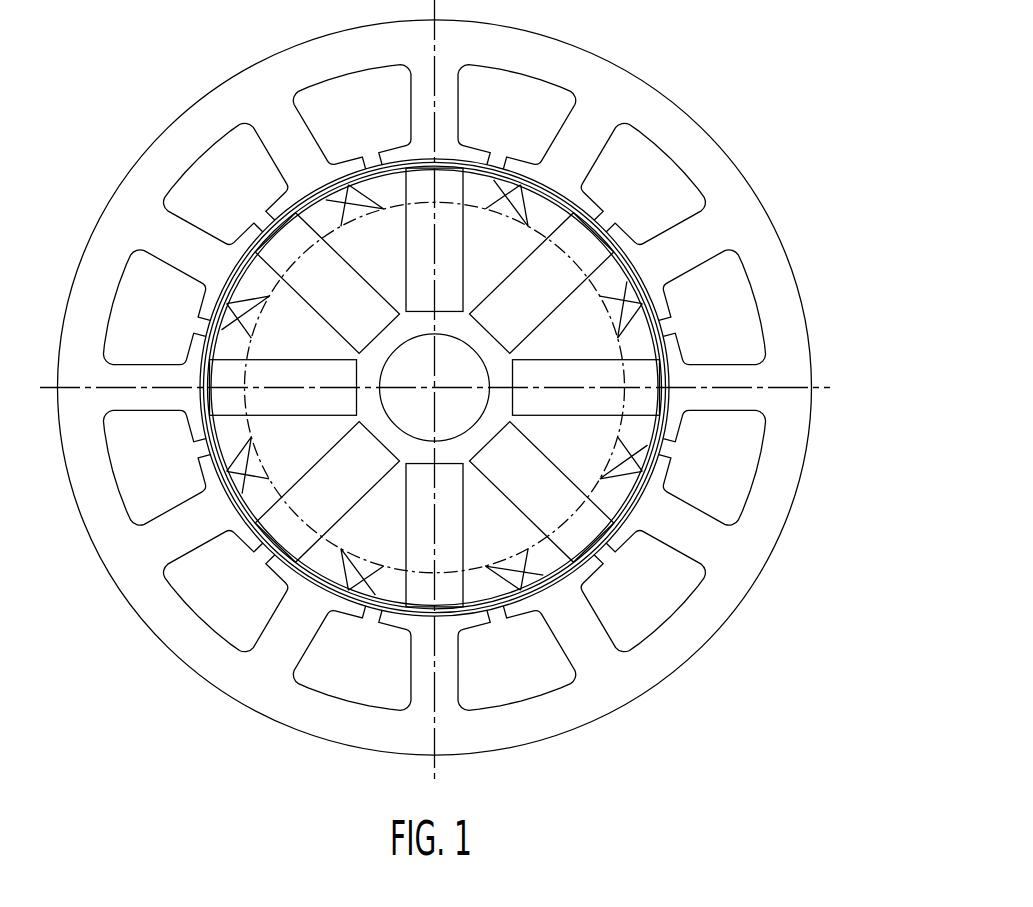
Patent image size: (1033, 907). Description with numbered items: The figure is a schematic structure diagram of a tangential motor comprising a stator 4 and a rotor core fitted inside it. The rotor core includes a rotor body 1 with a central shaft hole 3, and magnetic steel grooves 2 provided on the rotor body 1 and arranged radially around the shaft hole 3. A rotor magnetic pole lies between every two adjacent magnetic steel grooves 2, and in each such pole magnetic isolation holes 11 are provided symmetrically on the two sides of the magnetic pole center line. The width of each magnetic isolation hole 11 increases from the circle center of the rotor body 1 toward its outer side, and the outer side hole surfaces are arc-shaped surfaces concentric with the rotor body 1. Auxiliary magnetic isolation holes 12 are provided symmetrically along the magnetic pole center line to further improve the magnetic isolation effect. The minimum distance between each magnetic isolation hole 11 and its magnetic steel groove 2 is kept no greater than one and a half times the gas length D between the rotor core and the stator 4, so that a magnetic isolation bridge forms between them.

The rotor body 1 is at (351, 584).
The magnetic steel groove 2 is at (292, 524).
The shaft hole 3 is at (453, 408).
The stator 4 is at (188, 137).
The magnetic isolation hole 11 is at (256, 513).
The auxiliary magnetic isolation hole 12 is at (245, 472).
The gas length D is at (529, 208).